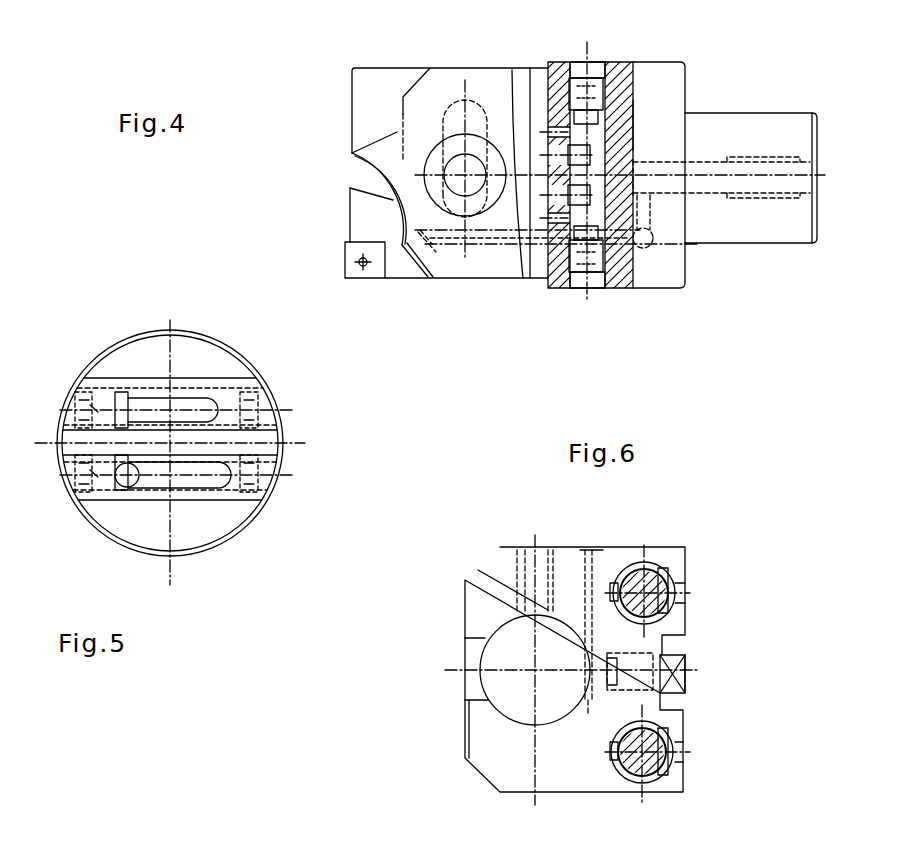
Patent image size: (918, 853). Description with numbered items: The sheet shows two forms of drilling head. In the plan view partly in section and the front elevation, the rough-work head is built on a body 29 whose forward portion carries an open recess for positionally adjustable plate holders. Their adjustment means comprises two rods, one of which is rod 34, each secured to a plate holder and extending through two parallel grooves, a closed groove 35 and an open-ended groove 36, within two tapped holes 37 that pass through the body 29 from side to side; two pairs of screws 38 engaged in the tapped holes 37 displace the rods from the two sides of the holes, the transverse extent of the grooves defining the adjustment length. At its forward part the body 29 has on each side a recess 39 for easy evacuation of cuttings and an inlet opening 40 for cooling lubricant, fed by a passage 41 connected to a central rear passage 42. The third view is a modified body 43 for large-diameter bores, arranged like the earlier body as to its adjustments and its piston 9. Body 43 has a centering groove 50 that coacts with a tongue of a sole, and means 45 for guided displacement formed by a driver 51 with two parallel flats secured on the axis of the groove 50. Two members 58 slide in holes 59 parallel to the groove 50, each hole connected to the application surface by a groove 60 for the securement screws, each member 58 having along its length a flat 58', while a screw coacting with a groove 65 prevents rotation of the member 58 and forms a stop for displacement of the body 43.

In FIG. 6, the piston 9 is at (500, 678).
In FIG. 4, the body 29 is at (478, 70).
In FIG. 4, the rod 34 is at (628, 105).
In FIG. 5, the closed groove 35 is at (152, 475).
In FIG. 5, the open groove 36 is at (150, 403).
In FIG. 4, the tapped hole 37 is at (622, 142).
In FIG. 5, the tapped hole 37 is at (265, 455).
In FIG. 4, the screw 38 is at (590, 97).
In FIG. 5, the screw 38 is at (92, 404).
In FIG. 4, the recess 39 is at (385, 192).
In FIG. 4, the inlet opening 40 is at (418, 83).
In FIG. 4, the passage 41 is at (484, 238).
In FIG. 4, the central rear passage 42 is at (750, 183).
In FIG. 6, the body 43 is at (497, 762).
In FIG. 6, the means for guided displacement 45 is at (740, 681).
In FIG. 6, the centering groove 50 is at (670, 645).
In FIG. 6, the driver 51 is at (685, 688).
In FIG. 6, the member 58 is at (647, 669).
In FIG. 6, the flat 58' is at (711, 663).
In FIG. 6, the hole 59 is at (650, 580).
In FIG. 6, the groove 60 is at (678, 603).
In FIG. 6, the groove 65 is at (608, 745).